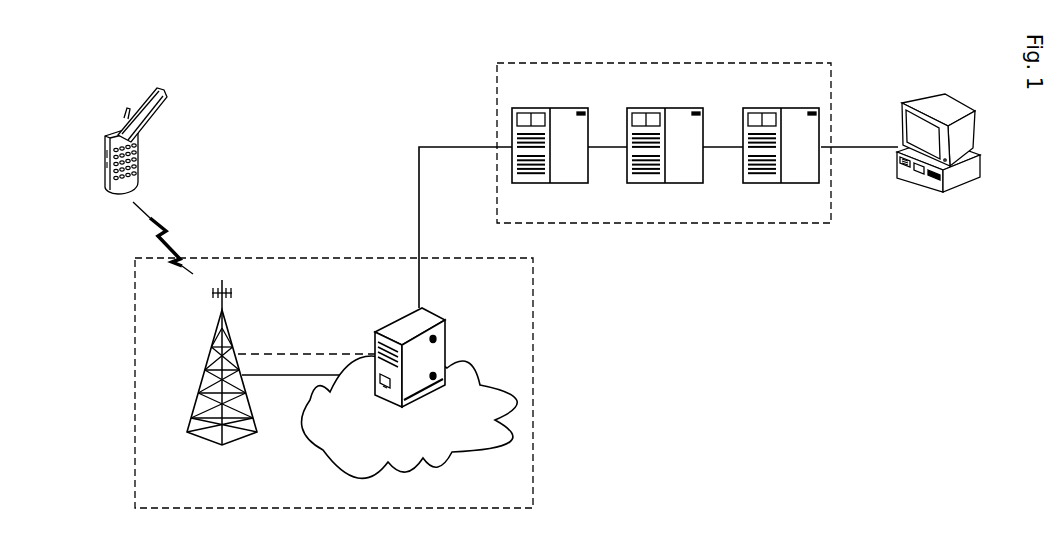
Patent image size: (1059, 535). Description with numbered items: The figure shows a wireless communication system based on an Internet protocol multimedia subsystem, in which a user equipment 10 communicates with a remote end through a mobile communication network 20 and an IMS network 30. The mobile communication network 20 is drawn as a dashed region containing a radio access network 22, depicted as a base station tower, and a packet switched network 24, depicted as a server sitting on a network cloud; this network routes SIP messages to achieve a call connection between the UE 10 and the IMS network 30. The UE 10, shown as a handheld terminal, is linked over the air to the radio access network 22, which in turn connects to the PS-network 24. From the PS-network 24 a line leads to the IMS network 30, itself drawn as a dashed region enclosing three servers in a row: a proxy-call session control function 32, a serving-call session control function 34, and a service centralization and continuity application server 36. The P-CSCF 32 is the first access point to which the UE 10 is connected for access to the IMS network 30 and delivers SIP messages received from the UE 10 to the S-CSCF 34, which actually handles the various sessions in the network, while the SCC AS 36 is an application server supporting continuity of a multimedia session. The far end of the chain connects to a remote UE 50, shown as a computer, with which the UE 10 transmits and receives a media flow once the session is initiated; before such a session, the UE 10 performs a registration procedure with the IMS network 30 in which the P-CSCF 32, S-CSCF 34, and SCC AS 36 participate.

The user equipment 10 is at (104, 150).
The mobile communication network 20 is at (296, 258).
The radio access network 22 is at (210, 354).
The packet switched network 24 is at (390, 324).
The IMS network 30 is at (797, 224).
The proxy-call session control function 32 is at (566, 108).
The serving-call session control function 34 is at (681, 108).
The service centralization and continuity application server 36 is at (804, 108).
The remote UE 50 is at (960, 184).